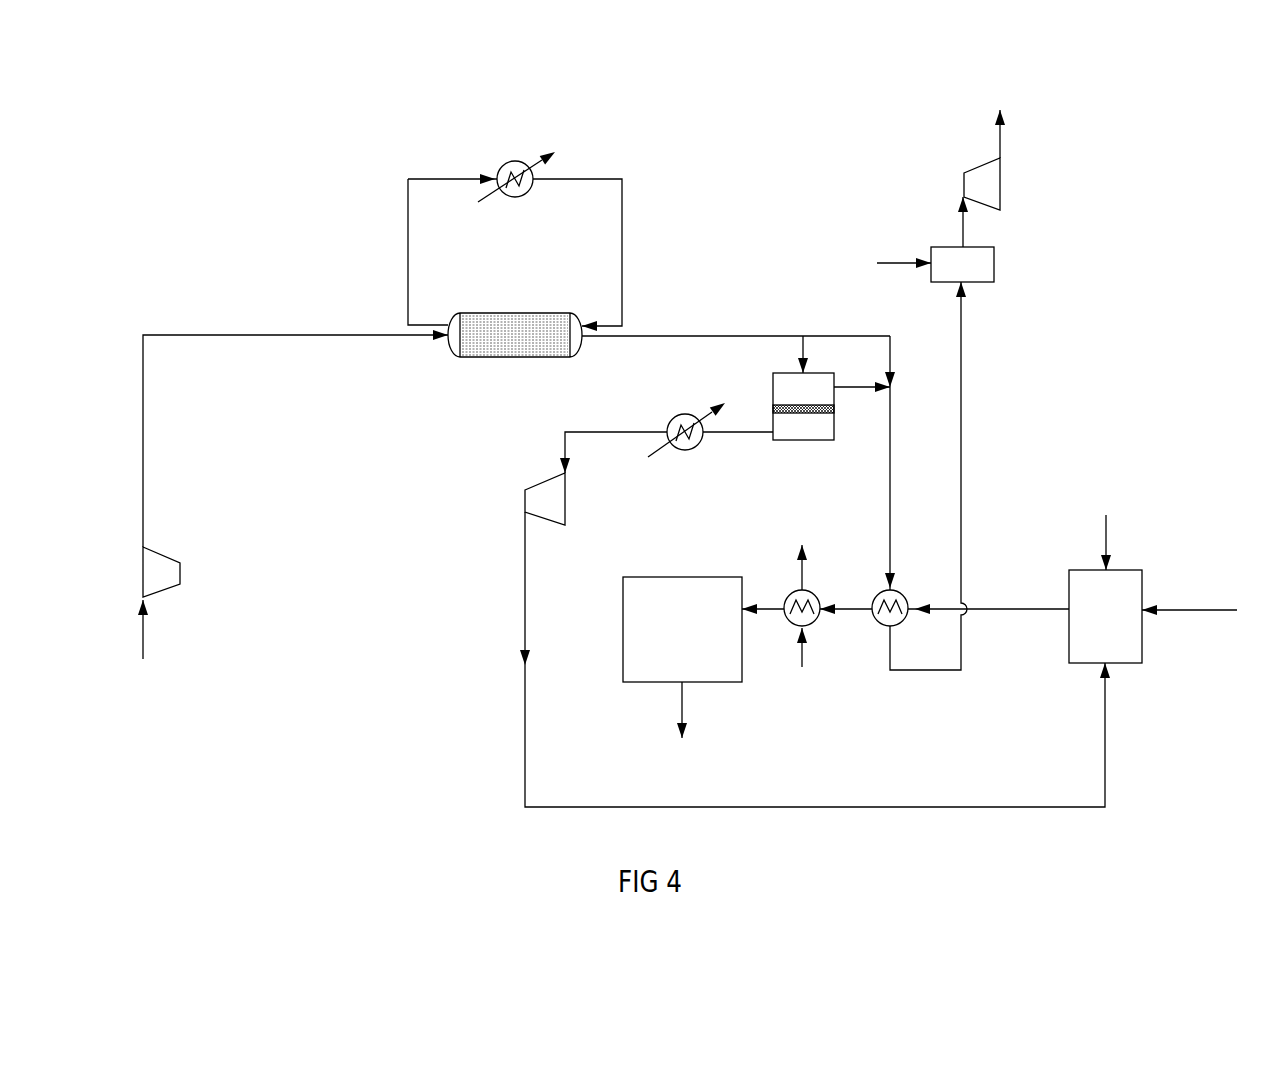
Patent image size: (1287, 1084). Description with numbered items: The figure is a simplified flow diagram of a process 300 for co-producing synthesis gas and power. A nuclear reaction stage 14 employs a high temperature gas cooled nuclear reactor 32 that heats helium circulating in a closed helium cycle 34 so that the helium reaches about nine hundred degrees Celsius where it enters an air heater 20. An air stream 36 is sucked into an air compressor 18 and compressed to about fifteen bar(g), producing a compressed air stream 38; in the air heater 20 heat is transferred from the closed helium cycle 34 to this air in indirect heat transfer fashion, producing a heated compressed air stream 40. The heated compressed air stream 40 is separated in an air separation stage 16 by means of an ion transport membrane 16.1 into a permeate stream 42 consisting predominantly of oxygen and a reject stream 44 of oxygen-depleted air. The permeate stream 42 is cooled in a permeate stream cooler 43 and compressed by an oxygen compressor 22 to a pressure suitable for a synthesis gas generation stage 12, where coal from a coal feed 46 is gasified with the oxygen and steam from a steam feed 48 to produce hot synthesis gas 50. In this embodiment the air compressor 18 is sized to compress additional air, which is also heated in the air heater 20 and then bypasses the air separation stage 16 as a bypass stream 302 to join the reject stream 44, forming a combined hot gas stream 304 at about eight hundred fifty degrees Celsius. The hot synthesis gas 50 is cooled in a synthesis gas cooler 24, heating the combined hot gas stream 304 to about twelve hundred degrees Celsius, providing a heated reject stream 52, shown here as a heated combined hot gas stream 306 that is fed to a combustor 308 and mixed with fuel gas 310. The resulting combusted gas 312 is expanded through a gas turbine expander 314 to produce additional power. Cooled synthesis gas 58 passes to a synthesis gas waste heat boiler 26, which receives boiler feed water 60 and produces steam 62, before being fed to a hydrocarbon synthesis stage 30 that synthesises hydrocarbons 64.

The synthesis gas generation stage 12 is at (1120, 625).
The nuclear reaction stage 14 is at (528, 227).
The air-separation stage 16 is at (783, 406).
The ion transport membrane 16.1 is at (820, 412).
The air compressor 18 is at (162, 565).
The air heater 20 is at (480, 355).
The oxygen compressor 22 is at (555, 502).
The synthesis gas cooler 24 is at (893, 588).
The synthesis gas waste heat boiler 26 is at (795, 588).
The hydrocarbon synthesis stage 30 is at (663, 642).
The high temperature gas cooled nuclear reactor 32 is at (507, 165).
The closed helium cycle 34 is at (623, 252).
The air stream 36 is at (145, 629).
The compressed air stream 38 is at (143, 411).
The heated compressed air stream 40 is at (723, 335).
The permeate stream 42 is at (633, 430).
The permeate stream cooler 43 is at (702, 443).
The reject stream 44 is at (838, 387).
The coal feed 46 is at (1108, 533).
The steam feed 48 is at (1188, 612).
The hot synthesis gas 50 is at (1005, 607).
The heated reject stream 52 is at (890, 638).
The cooled synthesis gas 58 is at (853, 607).
The boiler feed water 60 is at (805, 643).
The steam 62 is at (807, 582).
The hydrocarbons 64 is at (682, 703).
The process 300 is at (984, 204).
The bypass stream 302 is at (840, 335).
The combined hot gas stream 304 is at (890, 472).
The heated combined hot gas stream 306 is at (961, 393).
The combustor 308 is at (977, 263).
The fuel gas 310 is at (893, 260).
The combusted gas 312 is at (958, 228).
The gas turbine expander 314 is at (985, 167).